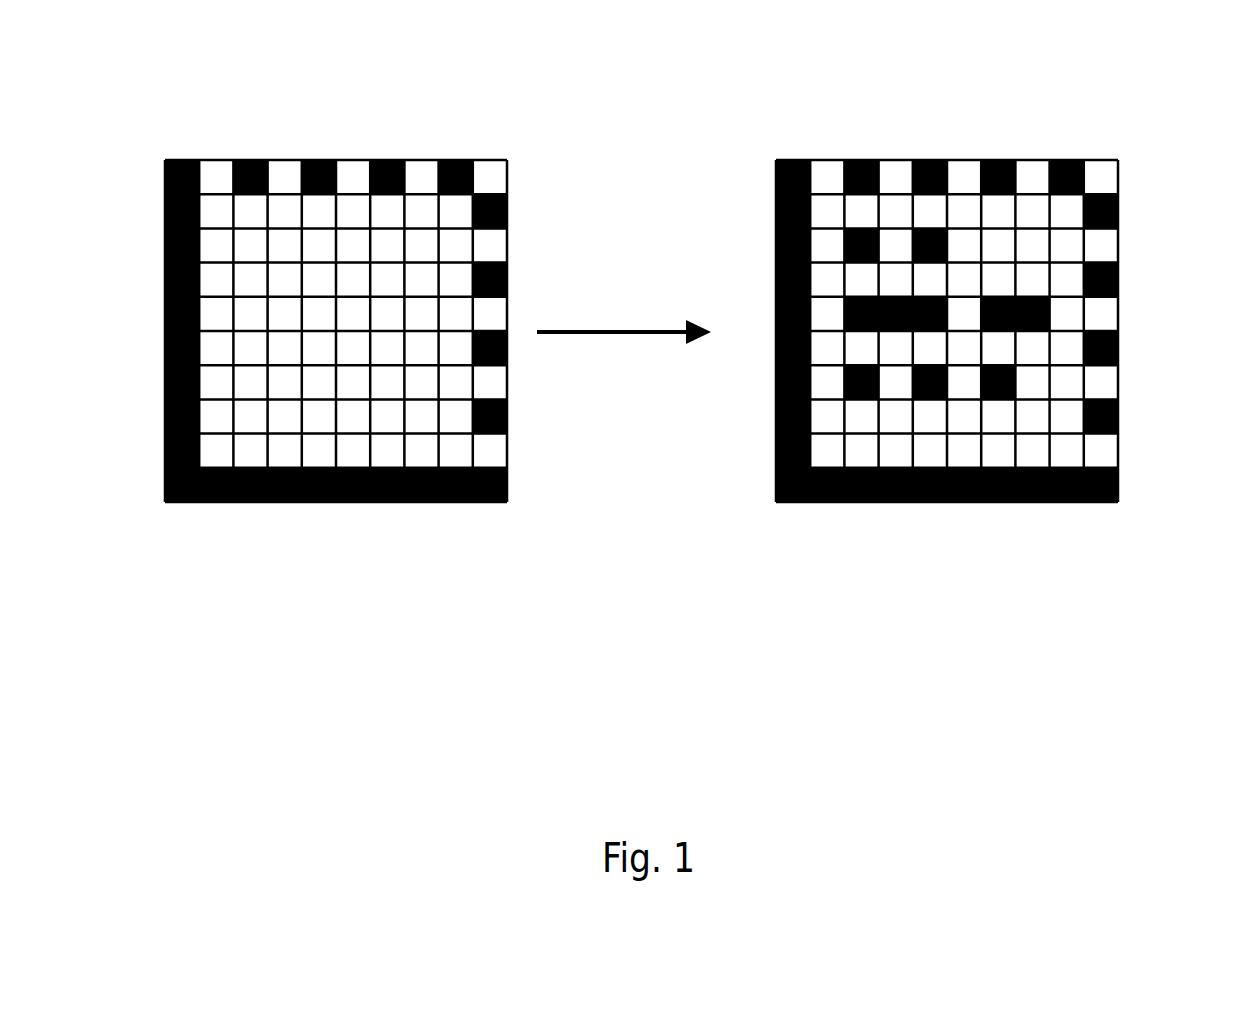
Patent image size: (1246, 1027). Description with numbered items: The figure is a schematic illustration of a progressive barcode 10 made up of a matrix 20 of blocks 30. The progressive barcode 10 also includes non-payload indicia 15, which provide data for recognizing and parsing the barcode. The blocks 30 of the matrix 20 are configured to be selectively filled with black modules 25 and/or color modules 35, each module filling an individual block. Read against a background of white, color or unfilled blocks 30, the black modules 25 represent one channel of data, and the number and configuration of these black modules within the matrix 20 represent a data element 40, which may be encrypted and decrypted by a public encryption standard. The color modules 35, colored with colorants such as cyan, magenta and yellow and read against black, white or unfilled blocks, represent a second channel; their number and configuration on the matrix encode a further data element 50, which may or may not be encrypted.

The progressive barcode 10 is at (372, 115).
The non-payload indicia 15 is at (508, 367).
The matrix 20 is at (485, 175).
The black modules 25 is at (932, 222).
The blocks 30 is at (215, 215).
The color modules 35 is at (1045, 277).
The data element 40 is at (1100, 603).
The data element 50 is at (1072, 733).